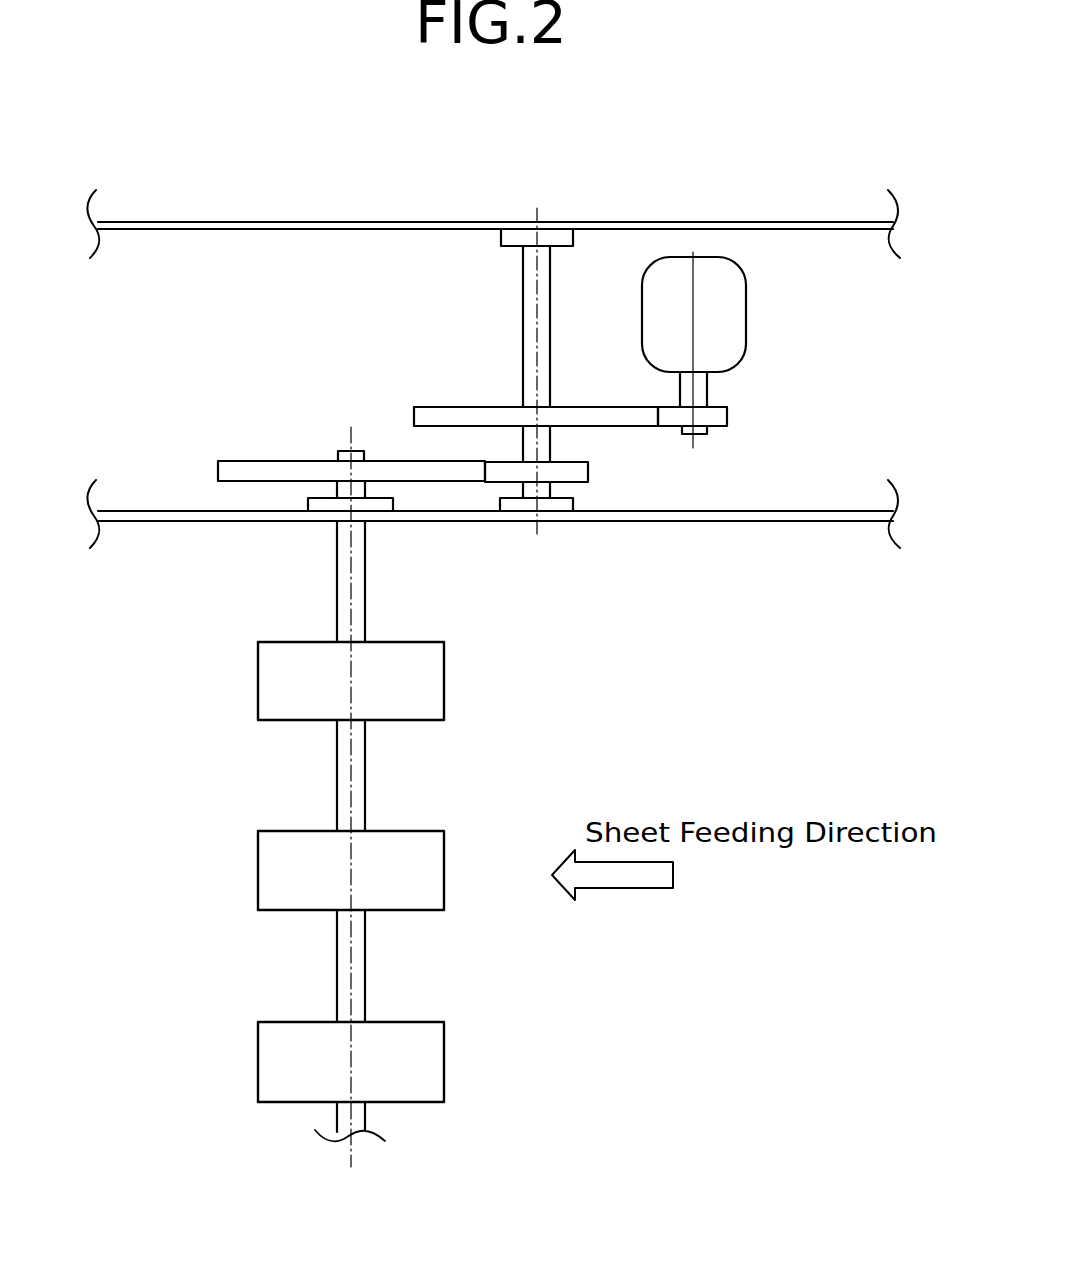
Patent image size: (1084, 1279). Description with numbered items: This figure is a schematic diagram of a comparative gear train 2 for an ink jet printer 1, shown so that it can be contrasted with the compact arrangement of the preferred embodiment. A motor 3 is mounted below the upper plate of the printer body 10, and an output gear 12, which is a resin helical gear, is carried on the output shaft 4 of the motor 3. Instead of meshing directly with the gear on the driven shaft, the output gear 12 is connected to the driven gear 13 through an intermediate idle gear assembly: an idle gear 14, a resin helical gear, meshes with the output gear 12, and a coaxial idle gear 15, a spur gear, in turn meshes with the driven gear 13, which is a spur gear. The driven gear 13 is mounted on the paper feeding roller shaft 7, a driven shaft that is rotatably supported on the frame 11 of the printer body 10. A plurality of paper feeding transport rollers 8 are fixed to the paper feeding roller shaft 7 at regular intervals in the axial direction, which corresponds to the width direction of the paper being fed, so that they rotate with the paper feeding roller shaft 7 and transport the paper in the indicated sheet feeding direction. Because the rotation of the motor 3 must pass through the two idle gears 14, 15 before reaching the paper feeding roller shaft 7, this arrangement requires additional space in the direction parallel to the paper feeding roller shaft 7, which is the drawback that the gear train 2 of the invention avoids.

The ink jet printer 1 is at (792, 210).
The gear train 2 is at (197, 477).
The motor 3 is at (737, 328).
The output shaft 4 is at (703, 388).
The paper feeding roller shaft 7 is at (368, 607).
The paper feeding transport rollers 8 is at (438, 687).
The printer body 10 is at (355, 220).
The frame 11 is at (237, 221).
The output gear 12 is at (722, 415).
The driven gear 13 is at (253, 470).
The idle gear 14 is at (442, 415).
The idle gear 15 is at (583, 470).